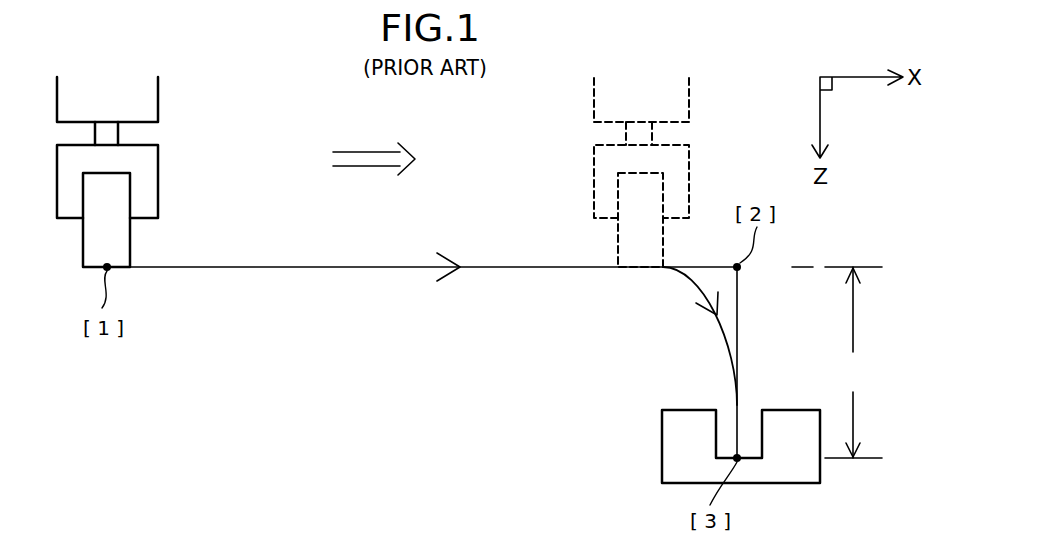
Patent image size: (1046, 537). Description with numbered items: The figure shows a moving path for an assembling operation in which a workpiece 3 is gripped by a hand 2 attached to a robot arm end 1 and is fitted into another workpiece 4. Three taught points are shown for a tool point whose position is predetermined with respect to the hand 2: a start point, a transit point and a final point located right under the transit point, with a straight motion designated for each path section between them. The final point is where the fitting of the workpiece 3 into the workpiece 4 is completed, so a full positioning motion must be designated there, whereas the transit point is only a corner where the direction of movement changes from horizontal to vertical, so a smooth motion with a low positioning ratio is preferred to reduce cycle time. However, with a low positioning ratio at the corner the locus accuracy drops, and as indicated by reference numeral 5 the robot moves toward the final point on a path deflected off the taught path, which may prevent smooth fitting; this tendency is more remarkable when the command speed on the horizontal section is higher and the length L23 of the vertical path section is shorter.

The robot arm end 1 is at (145, 107).
The hand 2 is at (148, 175).
The workpiece 3 is at (123, 243).
The another workpiece 4 is at (680, 437).
The deflected path 5 is at (698, 289).
The length of the path section [2]→[3] L23 is at (837, 362).